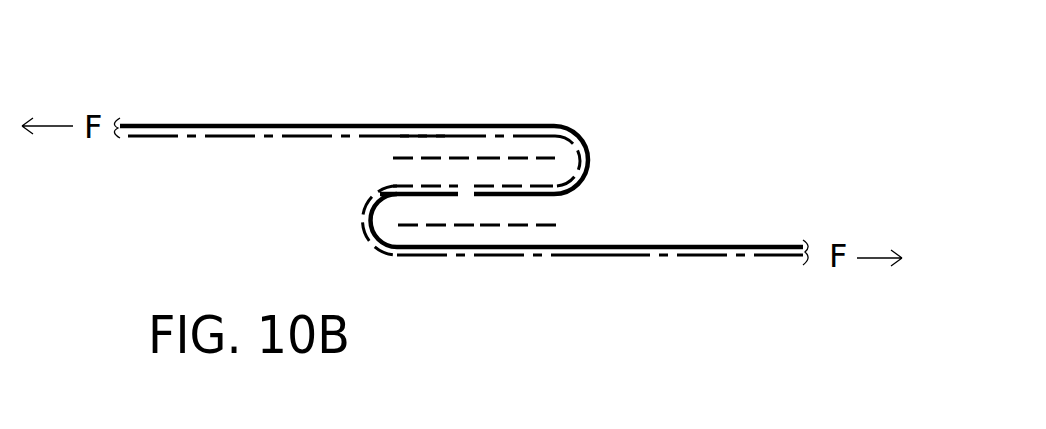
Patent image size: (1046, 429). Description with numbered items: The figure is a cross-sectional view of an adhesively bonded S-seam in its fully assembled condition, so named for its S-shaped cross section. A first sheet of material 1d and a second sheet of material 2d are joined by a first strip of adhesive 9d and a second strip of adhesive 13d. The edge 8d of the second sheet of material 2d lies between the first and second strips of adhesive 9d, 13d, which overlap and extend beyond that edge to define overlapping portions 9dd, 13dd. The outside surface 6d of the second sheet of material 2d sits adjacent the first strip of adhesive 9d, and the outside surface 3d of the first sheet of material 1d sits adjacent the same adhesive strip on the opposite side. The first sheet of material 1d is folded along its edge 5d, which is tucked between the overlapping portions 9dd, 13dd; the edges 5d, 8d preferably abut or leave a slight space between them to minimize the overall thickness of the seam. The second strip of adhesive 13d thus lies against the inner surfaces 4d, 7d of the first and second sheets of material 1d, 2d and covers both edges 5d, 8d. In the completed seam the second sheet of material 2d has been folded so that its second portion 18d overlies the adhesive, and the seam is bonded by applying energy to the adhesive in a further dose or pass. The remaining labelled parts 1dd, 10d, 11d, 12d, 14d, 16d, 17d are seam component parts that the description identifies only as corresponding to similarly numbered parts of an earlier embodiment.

The first sheet of material 1d is at (743, 281).
The seam component part 1dd is at (423, 250).
The second sheet of material 2d is at (197, 112).
The outside surface of first sheet of material 3d is at (707, 245).
The inner surface of first sheet of material 4d is at (695, 260).
The edge of first sheet of material 5d is at (458, 183).
The outside surface of second sheet of material 6d is at (310, 124).
The inner surface of second sheet of material 7d is at (215, 140).
The edge of second sheet of material 8d is at (480, 187).
The first strip of adhesive 9d is at (548, 225).
The overlapping portion of first strip of adhesive 9dd is at (422, 228).
The seam component part 10d is at (530, 232).
The seam component part 11d is at (520, 222).
The seam component part 12d is at (371, 241).
The second strip of adhesive 13d is at (520, 158).
The overlapping portion of second strip of adhesive 13dd is at (412, 167).
The seam component part 14d is at (522, 161).
The seam component part 16d is at (388, 160).
The seam component part 17d is at (572, 185).
The second portion of second sheet of material 18d is at (437, 135).